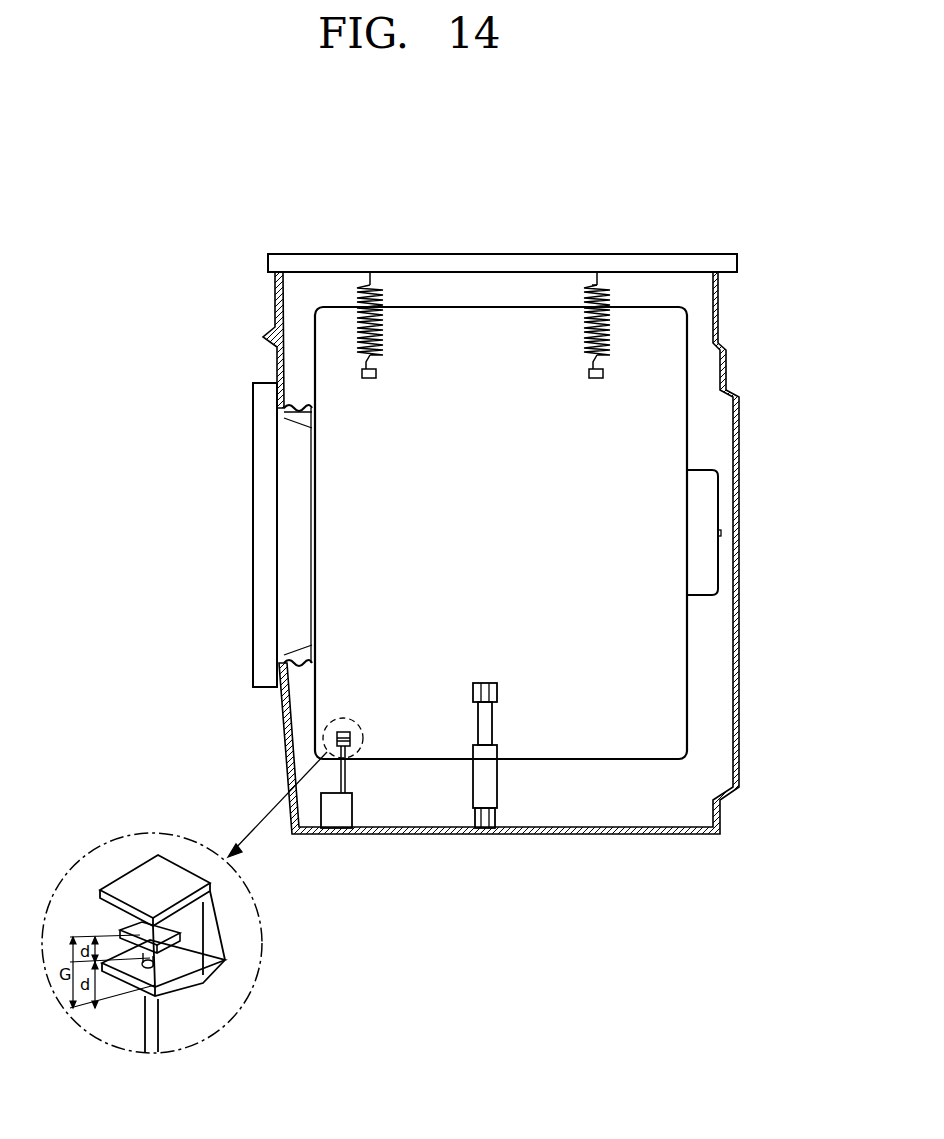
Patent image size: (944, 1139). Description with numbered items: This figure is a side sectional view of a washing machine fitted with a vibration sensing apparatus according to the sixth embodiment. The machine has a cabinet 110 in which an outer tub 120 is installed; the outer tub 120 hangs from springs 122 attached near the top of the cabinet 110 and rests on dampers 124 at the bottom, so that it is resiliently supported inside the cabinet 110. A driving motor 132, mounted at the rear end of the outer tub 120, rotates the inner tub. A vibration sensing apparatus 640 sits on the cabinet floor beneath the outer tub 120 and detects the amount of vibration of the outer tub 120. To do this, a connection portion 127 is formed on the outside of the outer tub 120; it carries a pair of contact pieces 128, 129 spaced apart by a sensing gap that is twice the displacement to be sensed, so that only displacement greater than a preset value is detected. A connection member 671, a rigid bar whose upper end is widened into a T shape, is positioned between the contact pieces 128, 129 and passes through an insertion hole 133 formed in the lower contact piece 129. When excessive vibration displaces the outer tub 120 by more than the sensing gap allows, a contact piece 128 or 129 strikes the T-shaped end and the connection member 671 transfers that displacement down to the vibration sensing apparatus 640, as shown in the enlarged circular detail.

The cabinet 110 is at (720, 315).
The outer tub 120 is at (672, 687).
The springs 122 is at (604, 285).
The dampers 124 is at (493, 783).
The driving motor 132 is at (710, 563).
The vibration sensing apparatus 640 is at (362, 814).
The connection portion 127 is at (244, 946).
The contact piece 128 is at (182, 907).
The lower contact piece 129 is at (188, 980).
The insertion hole 133 is at (145, 966).
The connection member 671 is at (158, 1030).